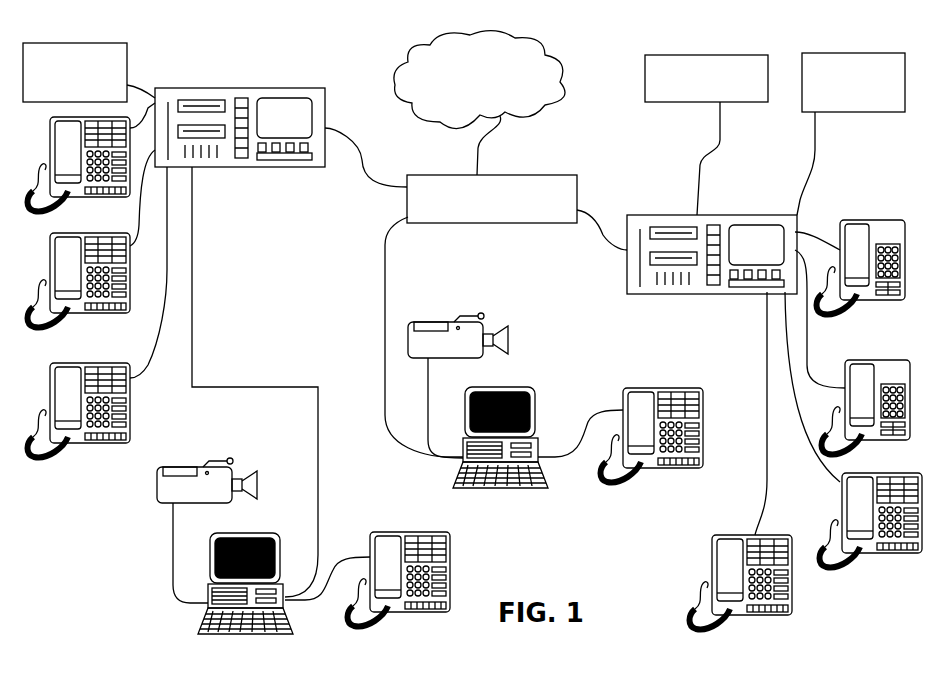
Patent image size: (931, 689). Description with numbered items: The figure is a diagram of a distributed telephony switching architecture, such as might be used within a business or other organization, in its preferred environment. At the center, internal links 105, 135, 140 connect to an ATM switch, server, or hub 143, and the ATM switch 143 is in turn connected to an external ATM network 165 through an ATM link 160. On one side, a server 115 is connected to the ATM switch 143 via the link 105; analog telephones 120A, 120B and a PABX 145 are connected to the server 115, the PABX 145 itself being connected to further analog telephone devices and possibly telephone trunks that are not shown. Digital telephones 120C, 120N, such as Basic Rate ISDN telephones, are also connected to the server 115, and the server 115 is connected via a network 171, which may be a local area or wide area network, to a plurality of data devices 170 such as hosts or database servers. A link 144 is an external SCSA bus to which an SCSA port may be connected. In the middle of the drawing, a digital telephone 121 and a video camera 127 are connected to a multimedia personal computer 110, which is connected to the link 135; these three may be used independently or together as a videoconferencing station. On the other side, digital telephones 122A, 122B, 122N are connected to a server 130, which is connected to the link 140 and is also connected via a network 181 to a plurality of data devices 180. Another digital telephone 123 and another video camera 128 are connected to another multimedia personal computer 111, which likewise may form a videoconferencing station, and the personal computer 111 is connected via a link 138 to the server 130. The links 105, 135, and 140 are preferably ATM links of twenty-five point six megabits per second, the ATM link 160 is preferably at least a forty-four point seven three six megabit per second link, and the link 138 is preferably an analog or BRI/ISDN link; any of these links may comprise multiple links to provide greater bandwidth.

The internal link 105 is at (603, 238).
The multimedia personal computer 110 is at (512, 387).
The multimedia personal computer 111 is at (253, 533).
The server 115 is at (695, 293).
The analog telephone 120A is at (875, 220).
The analog telephone 120B is at (887, 358).
The digital telephone 120C is at (867, 558).
The digital telephone 120N is at (705, 563).
The digital telephone 121 is at (660, 388).
The digital telephone 122A is at (118, 202).
The digital telephone 122B is at (123, 327).
The digital telephone 122N is at (82, 445).
The digital telephone 123 is at (402, 528).
The video camera 127 is at (438, 320).
The video camera 128 is at (188, 467).
The server 130 is at (238, 88).
The internal link 135 is at (383, 328).
The link 138 is at (320, 417).
The internal link 140 is at (360, 180).
The ATM switch 143 is at (482, 223).
The external SCSA bus link 144 is at (698, 163).
The PABX 145 is at (675, 104).
The ATM link 160 is at (477, 148).
The external ATM network 165 is at (410, 52).
The data devices 170 is at (887, 113).
The network 171 is at (820, 163).
The data devices 180 is at (128, 49).
The network 181 is at (143, 83).